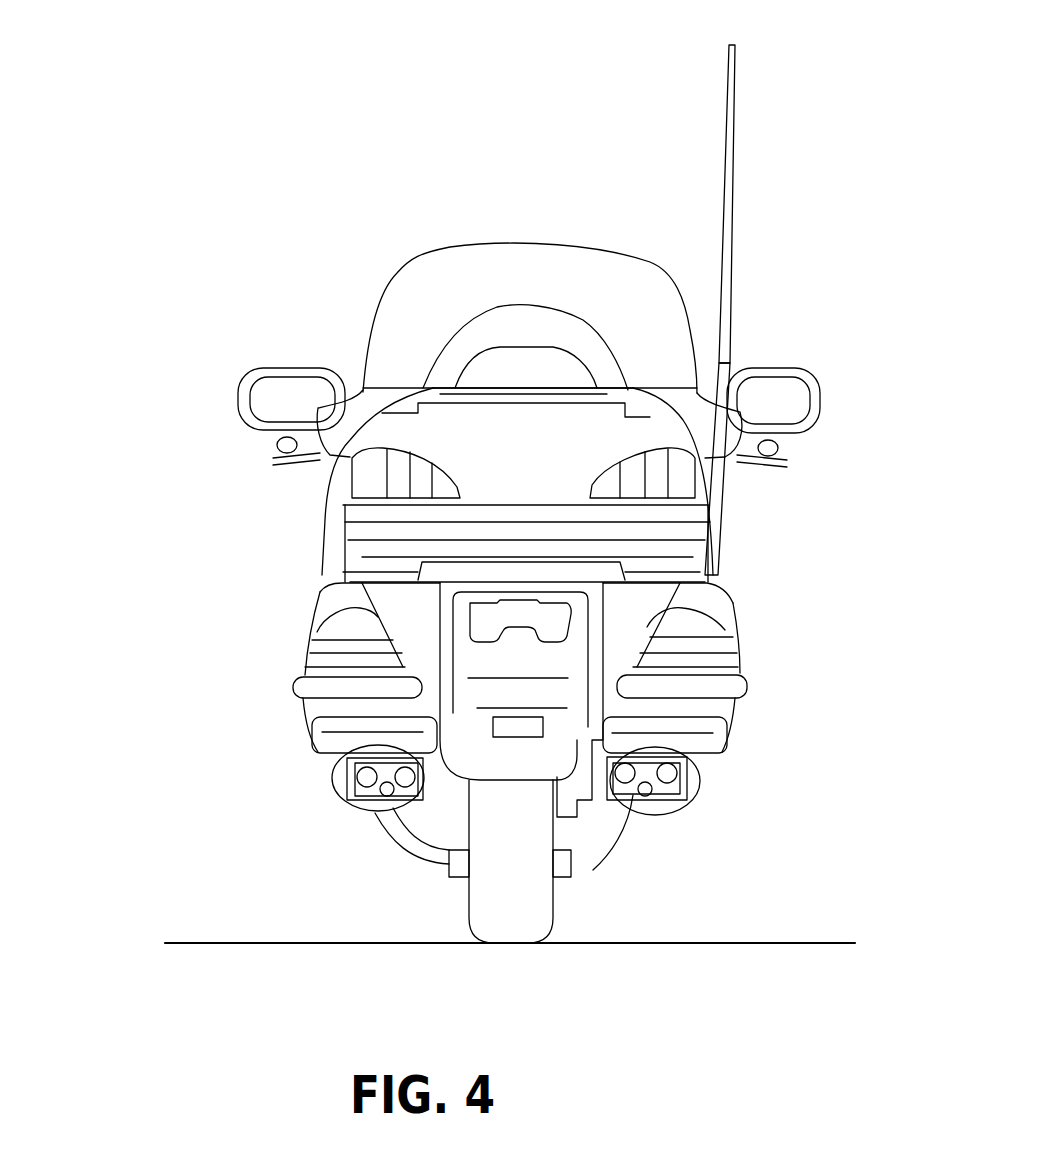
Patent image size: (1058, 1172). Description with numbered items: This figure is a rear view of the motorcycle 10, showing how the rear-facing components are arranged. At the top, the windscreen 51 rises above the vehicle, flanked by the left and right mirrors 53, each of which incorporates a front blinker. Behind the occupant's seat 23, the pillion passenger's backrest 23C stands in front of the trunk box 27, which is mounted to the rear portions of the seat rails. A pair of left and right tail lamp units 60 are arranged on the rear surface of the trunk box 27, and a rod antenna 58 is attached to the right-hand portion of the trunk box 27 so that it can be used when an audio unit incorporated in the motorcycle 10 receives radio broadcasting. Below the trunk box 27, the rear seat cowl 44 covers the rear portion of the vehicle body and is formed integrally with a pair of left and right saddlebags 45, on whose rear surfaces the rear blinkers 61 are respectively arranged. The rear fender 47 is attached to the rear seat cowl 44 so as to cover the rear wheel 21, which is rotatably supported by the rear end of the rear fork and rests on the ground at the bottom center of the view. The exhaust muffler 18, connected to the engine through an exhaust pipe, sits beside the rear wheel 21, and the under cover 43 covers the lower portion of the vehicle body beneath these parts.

The motorcycle 10 is at (195, 182).
The exhaust muffler 18 is at (340, 797).
The rear wheel 21 is at (483, 835).
The occupant's seat 23 is at (533, 283).
The pillion passenger's backrest 23C is at (492, 305).
The trunk box 27 is at (530, 440).
The under cover 43 is at (627, 845).
The rear seat cowl 44 is at (325, 775).
The saddlebags 45 is at (317, 600).
The rear fender 47 is at (610, 703).
The windscreen 51 is at (395, 274).
The mirrors 53 is at (275, 368).
The rod antenna 58 is at (736, 123).
The tail lamp units 60 is at (378, 483).
The rear blinkers 61 is at (322, 642).